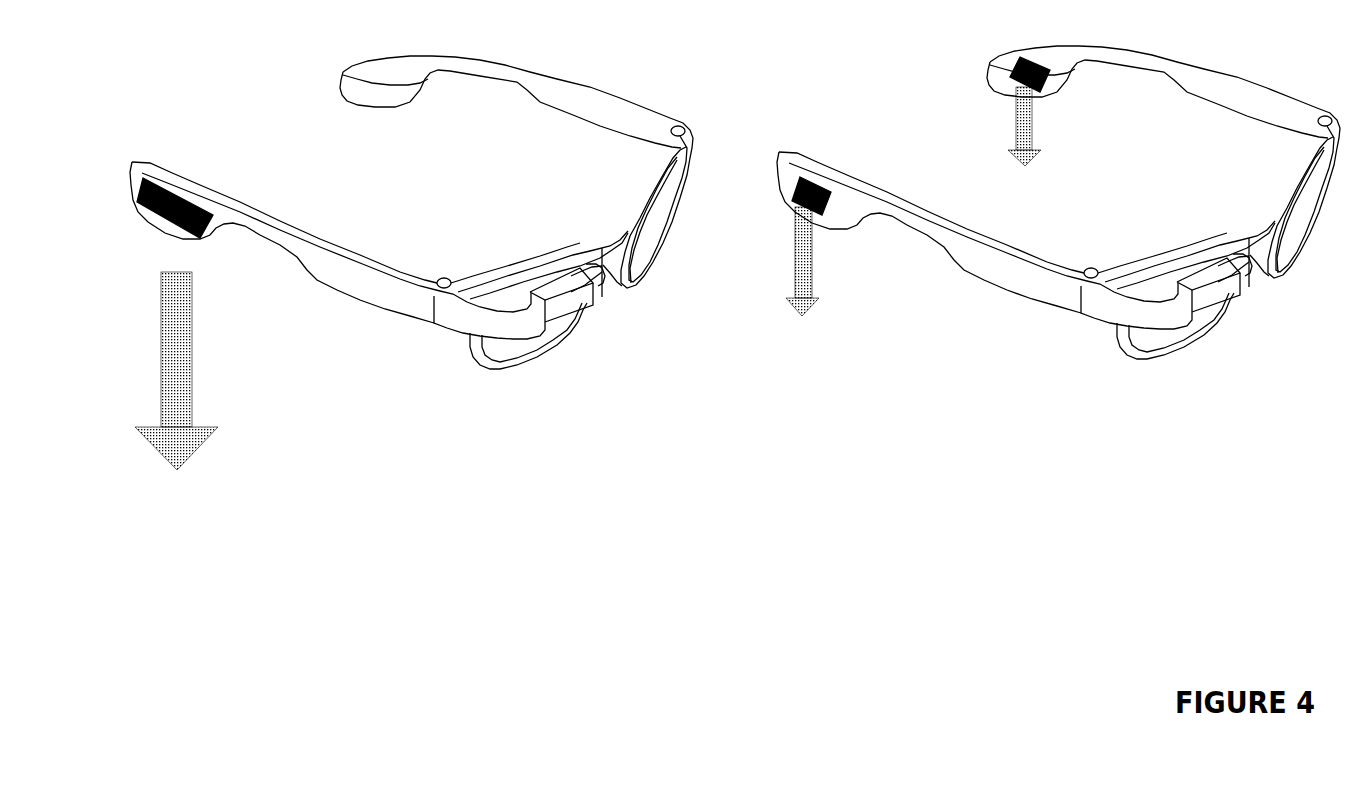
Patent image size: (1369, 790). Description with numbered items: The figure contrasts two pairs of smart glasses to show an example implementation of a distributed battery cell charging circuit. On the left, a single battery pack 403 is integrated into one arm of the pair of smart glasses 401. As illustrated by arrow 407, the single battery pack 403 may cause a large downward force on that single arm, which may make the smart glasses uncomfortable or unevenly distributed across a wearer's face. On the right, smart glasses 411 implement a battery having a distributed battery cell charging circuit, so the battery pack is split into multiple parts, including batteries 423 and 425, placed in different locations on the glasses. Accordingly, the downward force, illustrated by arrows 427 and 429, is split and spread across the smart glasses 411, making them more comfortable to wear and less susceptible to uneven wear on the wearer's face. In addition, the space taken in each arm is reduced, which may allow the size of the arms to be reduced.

The pair of smart glasses 401 is at (627, 108).
The single battery pack 403 is at (217, 218).
The arrow 407 is at (187, 388).
The smart glasses 411 is at (1200, 80).
The battery 423 is at (832, 192).
The battery 425 is at (1047, 63).
The arrow 427 is at (815, 302).
The arrow 429 is at (1040, 155).